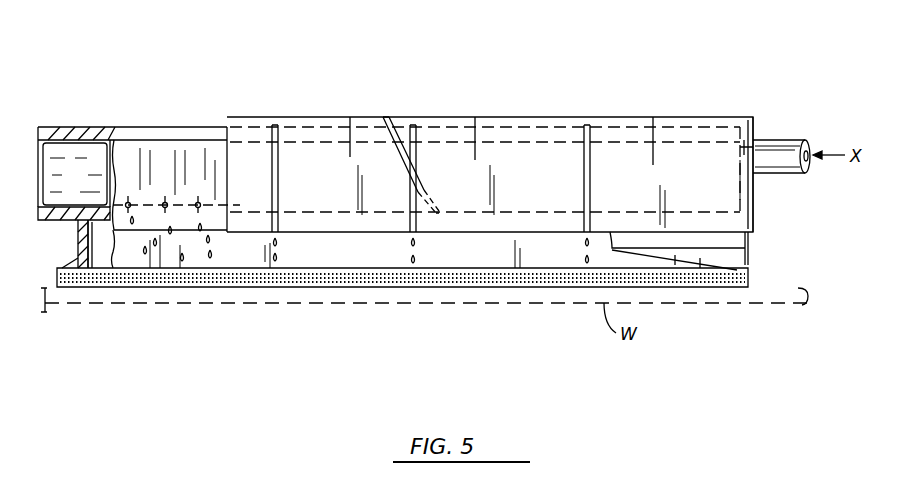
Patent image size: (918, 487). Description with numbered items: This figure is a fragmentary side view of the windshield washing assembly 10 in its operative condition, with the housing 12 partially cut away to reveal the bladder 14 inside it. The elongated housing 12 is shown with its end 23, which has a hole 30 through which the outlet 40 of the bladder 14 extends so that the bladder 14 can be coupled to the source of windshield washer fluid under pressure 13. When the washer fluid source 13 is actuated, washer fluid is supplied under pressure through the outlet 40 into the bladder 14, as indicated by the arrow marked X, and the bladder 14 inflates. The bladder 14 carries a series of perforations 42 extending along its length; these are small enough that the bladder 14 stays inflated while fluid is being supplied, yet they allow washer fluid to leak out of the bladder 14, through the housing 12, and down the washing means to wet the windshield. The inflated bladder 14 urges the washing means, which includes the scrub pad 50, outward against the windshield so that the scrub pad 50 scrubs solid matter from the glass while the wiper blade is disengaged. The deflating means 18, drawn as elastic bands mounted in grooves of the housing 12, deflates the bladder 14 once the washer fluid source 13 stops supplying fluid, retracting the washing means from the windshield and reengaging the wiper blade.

The assembly 10 is at (454, 78).
The housing 12 is at (510, 117).
The source of windshield washer fluid under pressure 13 is at (248, 259).
The bladder 14 is at (120, 128).
The deflating means 18 is at (385, 117).
The end 23 is at (756, 203).
The hole 30 is at (745, 145).
The outlet 40 is at (775, 140).
The perforations 42 is at (128, 202).
The scrub pad 50 is at (325, 272).